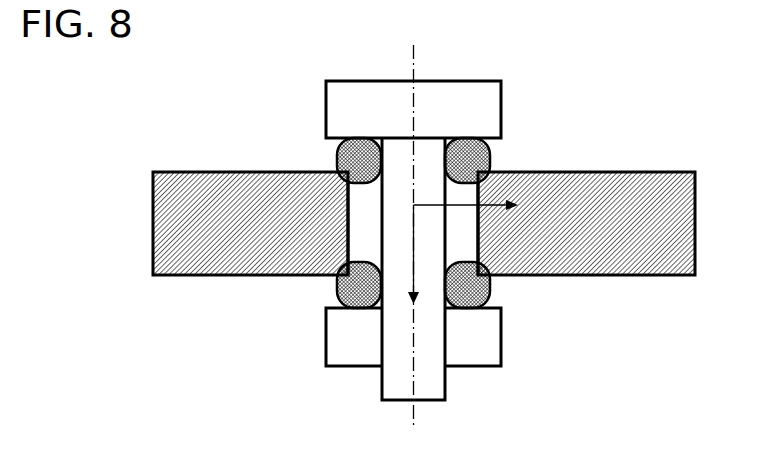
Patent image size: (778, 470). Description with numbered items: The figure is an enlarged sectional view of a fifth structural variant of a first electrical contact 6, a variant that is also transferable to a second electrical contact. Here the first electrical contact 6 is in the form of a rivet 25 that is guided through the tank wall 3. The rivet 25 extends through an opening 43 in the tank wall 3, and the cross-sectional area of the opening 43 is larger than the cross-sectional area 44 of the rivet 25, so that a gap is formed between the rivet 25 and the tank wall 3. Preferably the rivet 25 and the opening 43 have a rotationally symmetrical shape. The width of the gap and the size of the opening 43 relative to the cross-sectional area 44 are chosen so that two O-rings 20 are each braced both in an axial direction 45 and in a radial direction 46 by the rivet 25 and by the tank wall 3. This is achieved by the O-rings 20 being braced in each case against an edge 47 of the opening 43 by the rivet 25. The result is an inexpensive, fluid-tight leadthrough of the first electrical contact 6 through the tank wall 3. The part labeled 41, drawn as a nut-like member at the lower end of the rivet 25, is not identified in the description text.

The tank wall 3 is at (429, 205).
The first electrical contact 6 is at (415, 213).
The O-rings 20 is at (490, 141).
The rivet 25 is at (337, 81).
The nut 41 is at (501, 366).
The opening 43 is at (358, 218).
The cross-sectional area 44 is at (447, 219).
The axial direction 45 is at (421, 214).
The radial direction 46 is at (513, 201).
The edge 47 is at (340, 148).